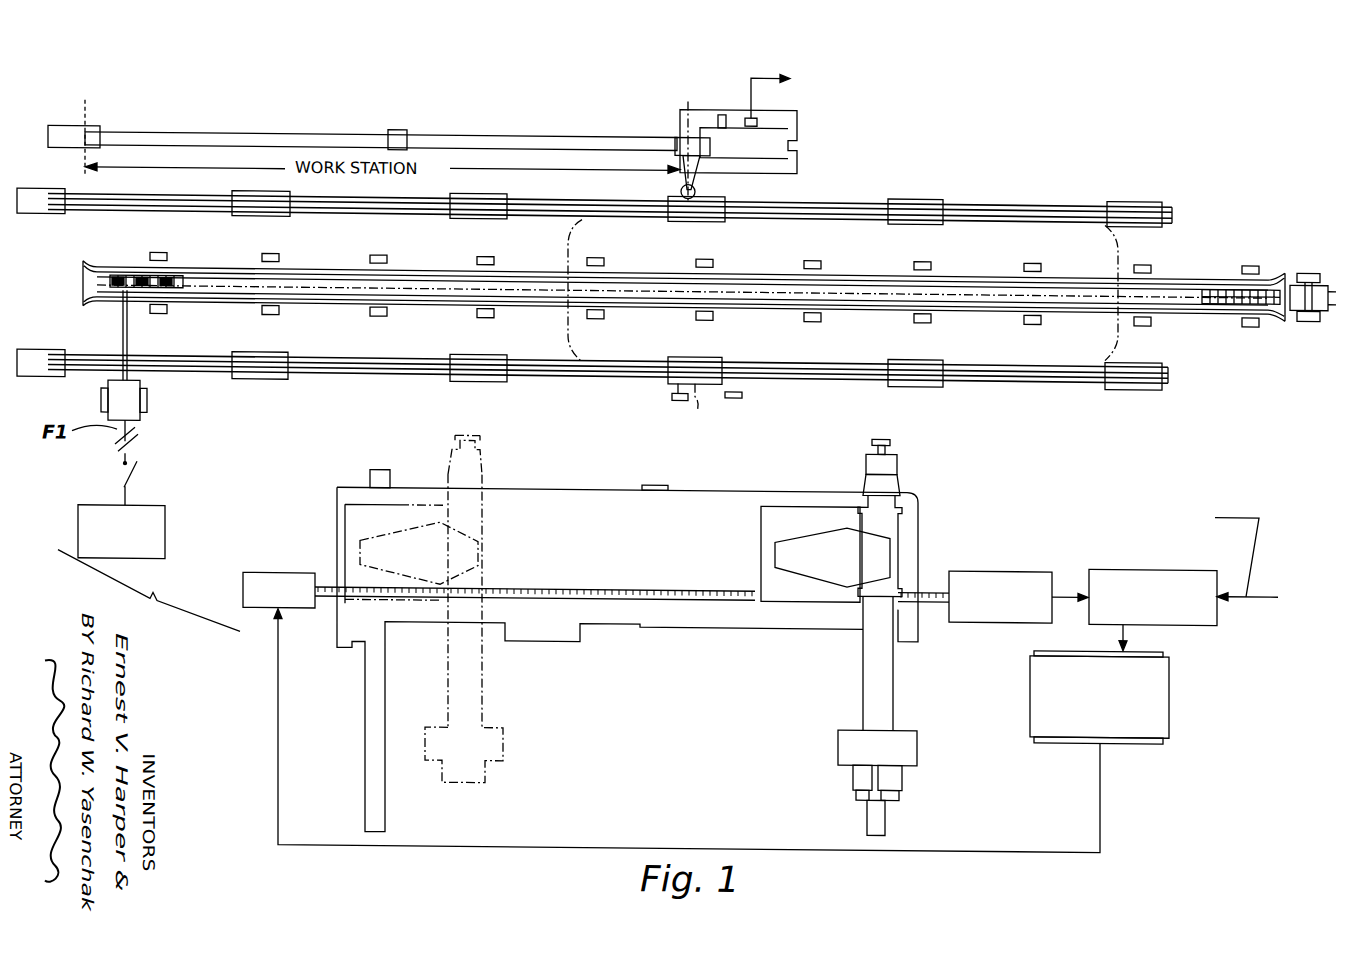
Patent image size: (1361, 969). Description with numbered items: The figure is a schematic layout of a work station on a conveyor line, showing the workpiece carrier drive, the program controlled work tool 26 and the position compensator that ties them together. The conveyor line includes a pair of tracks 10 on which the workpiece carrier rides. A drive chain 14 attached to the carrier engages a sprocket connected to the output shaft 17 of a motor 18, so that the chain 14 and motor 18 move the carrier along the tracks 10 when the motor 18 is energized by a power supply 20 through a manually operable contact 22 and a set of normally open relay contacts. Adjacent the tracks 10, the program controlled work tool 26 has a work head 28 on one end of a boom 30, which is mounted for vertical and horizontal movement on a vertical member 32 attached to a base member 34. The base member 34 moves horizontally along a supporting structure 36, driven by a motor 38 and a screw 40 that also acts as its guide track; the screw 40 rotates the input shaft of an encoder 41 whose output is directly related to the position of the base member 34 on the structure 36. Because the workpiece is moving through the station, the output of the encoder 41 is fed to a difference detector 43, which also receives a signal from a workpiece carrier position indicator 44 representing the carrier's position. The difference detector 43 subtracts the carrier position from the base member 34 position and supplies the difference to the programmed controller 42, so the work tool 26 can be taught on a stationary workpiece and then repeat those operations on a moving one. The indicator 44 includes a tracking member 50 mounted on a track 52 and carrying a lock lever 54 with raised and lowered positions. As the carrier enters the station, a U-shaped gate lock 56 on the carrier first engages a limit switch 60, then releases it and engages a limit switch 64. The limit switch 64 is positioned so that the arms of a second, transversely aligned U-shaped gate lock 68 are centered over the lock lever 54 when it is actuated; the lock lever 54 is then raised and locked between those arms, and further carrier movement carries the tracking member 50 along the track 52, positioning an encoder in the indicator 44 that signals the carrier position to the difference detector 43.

The tracks 10 is at (60, 349).
The drive chain 14 is at (173, 277).
The output shaft 17 is at (128, 335).
The motor 18 is at (122, 275).
The power supply 20 is at (165, 523).
The manually operable contact 22 is at (1038, 220).
The program controlled work tool 26 is at (922, 538).
The work head 28 is at (150, 396).
The boom 30 is at (455, 727).
The vertical member 32 is at (783, 548).
The base member 34 is at (800, 503).
The supporting structure 36 is at (520, 484).
The motor 38 is at (268, 577).
The screw 40 is at (555, 585).
The encoder 41 is at (995, 568).
The programmed controller 42 is at (1158, 661).
The difference detector 43 is at (1183, 561).
The workpiece carrier position indicator 44 is at (703, 103).
The tracking member 50 is at (682, 133).
The track 52 is at (285, 140).
The lock lever 54 is at (693, 157).
The U-shaped gate lock 56 is at (711, 405).
The limit switch 60 is at (742, 390).
The limit switch 64 is at (675, 387).
The U-shaped gate lock 68 is at (680, 185).